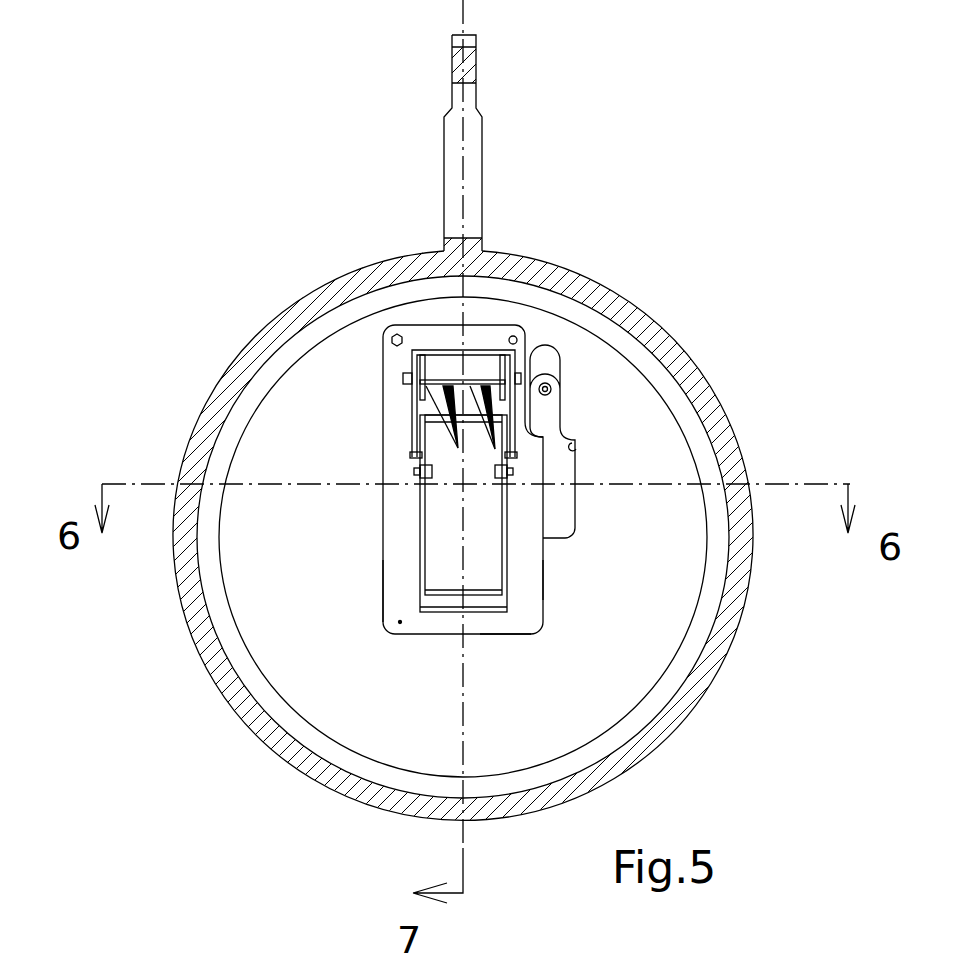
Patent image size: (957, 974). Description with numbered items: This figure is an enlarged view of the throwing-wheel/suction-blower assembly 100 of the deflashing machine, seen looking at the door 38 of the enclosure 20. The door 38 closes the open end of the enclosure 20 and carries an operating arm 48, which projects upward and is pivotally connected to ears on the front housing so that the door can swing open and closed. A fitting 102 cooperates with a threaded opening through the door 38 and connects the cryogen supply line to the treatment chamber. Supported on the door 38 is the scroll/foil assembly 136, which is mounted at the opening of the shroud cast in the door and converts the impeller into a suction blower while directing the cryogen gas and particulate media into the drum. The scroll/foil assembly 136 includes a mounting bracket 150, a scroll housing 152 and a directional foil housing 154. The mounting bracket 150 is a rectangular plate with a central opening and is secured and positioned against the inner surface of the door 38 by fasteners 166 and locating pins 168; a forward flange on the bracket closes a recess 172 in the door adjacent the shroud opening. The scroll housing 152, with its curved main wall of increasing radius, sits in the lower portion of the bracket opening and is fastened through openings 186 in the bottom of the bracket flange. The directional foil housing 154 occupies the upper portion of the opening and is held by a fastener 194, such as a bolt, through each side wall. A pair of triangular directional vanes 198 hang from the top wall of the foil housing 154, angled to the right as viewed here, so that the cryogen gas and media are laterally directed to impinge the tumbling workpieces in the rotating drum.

The enclosure 20 is at (193, 411).
The door 38 is at (271, 423).
The operating arm 48 is at (482, 165).
The throwing-wheel/suction-blower assembly 100 is at (558, 570).
The fitting 102 is at (546, 383).
The scroll/foil assembly 136 is at (373, 593).
The mounting bracket 150 is at (380, 548).
The scroll housing 152 is at (447, 595).
The directional foil housing 154 is at (448, 352).
The fasteners 166 is at (530, 618).
The locating pins 168 is at (400, 624).
The recess 172 is at (578, 446).
The openings 186 is at (513, 470).
The fastener 194 is at (405, 378).
The directional vanes 198 is at (452, 438).